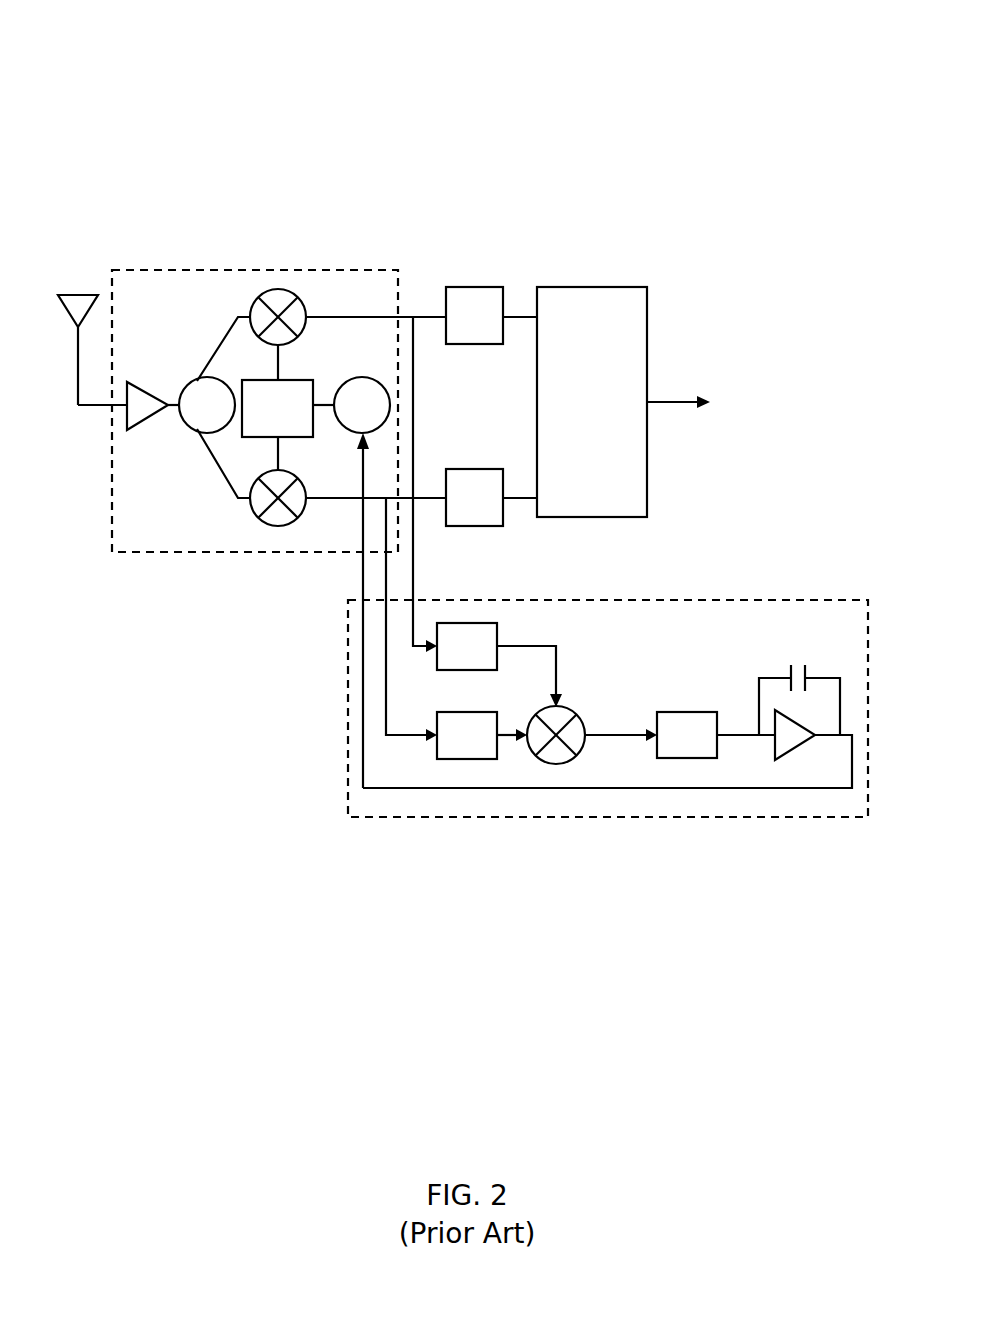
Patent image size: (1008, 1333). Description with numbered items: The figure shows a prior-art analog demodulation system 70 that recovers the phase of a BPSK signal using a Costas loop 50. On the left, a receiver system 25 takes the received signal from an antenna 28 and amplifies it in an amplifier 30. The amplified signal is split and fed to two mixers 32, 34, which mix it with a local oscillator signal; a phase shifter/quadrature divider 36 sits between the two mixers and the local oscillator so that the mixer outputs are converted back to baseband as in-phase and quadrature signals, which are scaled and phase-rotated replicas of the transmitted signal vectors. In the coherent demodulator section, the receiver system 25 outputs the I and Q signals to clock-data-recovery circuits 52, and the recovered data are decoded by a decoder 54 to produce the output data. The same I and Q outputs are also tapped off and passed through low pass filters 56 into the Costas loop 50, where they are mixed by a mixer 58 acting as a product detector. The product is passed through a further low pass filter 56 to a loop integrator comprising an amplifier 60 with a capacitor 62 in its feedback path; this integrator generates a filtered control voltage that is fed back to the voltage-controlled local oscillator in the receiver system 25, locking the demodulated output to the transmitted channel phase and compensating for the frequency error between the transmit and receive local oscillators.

The receiver system 25 is at (193, 552).
The antenna 28 is at (73, 372).
The amplifier 30 is at (157, 387).
The mixer 32 is at (290, 292).
The mixer 34 is at (250, 506).
The phase shifter/quadrature divider 36 is at (292, 378).
The Costas loop 50 is at (753, 817).
The clock-data-recovery circuit 52 is at (457, 344).
The decoder 54 is at (647, 440).
The low pass filter 56 is at (475, 670).
The mixer 58 is at (575, 707).
The amplifier 60 is at (775, 748).
The capacitor 62 is at (815, 675).
The analog demodulation system 70 is at (643, 26).